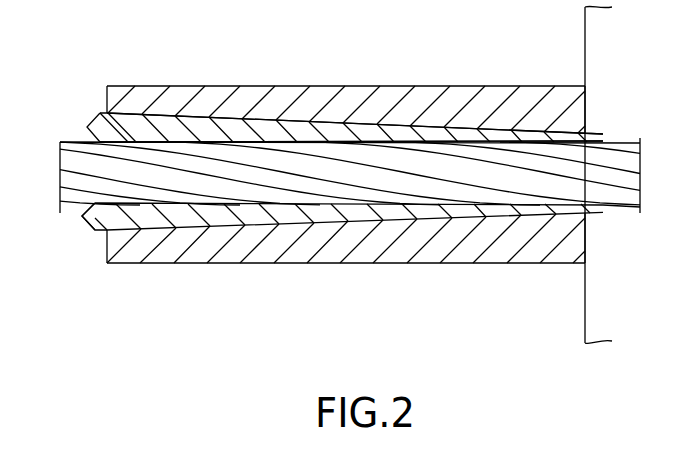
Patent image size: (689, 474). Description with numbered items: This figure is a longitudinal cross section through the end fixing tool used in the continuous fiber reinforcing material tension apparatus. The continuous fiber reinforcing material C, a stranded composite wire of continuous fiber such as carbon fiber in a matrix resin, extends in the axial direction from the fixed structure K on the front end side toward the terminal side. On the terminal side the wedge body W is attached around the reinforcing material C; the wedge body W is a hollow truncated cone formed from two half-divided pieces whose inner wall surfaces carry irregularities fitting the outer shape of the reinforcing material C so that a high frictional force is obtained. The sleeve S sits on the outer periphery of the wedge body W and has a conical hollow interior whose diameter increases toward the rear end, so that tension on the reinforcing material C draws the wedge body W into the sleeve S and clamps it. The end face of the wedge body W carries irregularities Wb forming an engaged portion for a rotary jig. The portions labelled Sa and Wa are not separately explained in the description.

The sleeve S is at (360, 86).
The inner surface of sheath Sa is at (224, 119).
The wedge body W is at (163, 113).
The inner surface of wrapping layer Wa is at (298, 145).
The irregularities (engaged portion) Wb is at (82, 216).
The continuous fiber reinforcing material C is at (626, 197).
The fixed structure K is at (585, 33).